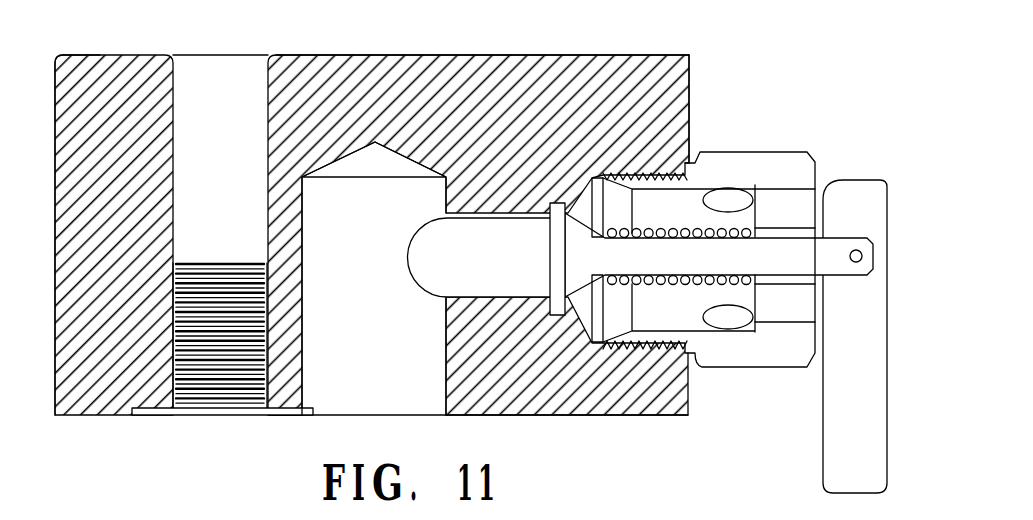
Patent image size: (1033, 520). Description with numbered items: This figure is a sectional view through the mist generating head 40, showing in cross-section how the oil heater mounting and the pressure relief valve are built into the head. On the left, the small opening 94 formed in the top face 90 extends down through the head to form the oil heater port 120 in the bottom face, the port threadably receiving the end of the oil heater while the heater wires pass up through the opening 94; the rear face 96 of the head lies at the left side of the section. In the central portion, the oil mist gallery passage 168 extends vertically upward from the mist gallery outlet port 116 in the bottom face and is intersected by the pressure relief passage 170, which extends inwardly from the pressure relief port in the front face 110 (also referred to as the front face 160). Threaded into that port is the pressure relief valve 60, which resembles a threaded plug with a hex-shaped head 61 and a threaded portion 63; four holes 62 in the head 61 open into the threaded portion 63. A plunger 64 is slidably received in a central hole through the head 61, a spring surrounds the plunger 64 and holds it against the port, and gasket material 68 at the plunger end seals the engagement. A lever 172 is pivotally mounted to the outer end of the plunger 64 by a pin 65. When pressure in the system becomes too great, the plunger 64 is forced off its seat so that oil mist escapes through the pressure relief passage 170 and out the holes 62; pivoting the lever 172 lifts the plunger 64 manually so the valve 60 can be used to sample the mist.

The mist generating head 40 is at (609, 48).
The pressure relief valve 60 is at (785, 162).
The hex-shaped head 61 is at (807, 176).
The holes 62 is at (802, 211).
The threaded portion 63 is at (650, 176).
The plunger 64 is at (695, 284).
The pin 65 is at (857, 249).
The gasket material 68 is at (550, 252).
The top face 90 is at (440, 55).
The small opening 94 is at (268, 133).
The rear face 96 is at (53, 88).
The front face 110 is at (636, 415).
The mist gallery outlet port 116 is at (366, 416).
The oil heater port 120 is at (195, 412).
The front face 160 is at (689, 76).
The oil mist gallery passage 168 is at (445, 328).
The pressure relief passage 170 is at (473, 297).
The lever 172 is at (845, 443).